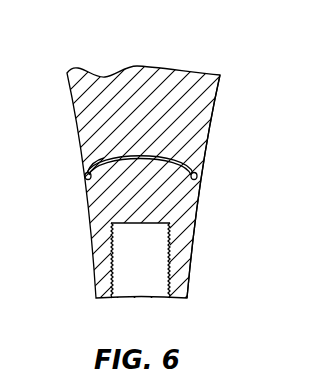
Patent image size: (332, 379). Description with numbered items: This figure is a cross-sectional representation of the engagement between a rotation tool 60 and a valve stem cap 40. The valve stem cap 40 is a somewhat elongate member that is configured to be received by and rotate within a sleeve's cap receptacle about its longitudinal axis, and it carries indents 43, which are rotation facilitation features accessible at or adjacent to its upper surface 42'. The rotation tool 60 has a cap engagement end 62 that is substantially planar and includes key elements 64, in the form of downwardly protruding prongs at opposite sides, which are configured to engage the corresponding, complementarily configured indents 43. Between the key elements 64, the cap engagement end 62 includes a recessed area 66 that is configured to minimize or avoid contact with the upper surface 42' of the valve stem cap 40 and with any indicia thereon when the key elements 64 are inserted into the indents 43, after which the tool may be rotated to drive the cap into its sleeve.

The rotation tool 60 is at (230, 73).
The cap engagement end 62 is at (212, 133).
The valve stem cap 40 is at (198, 255).
The key element 64 is at (196, 168).
The indent 43 is at (196, 182).
The recessed area 66 is at (88, 180).
The upper surface 42' is at (62, 161).